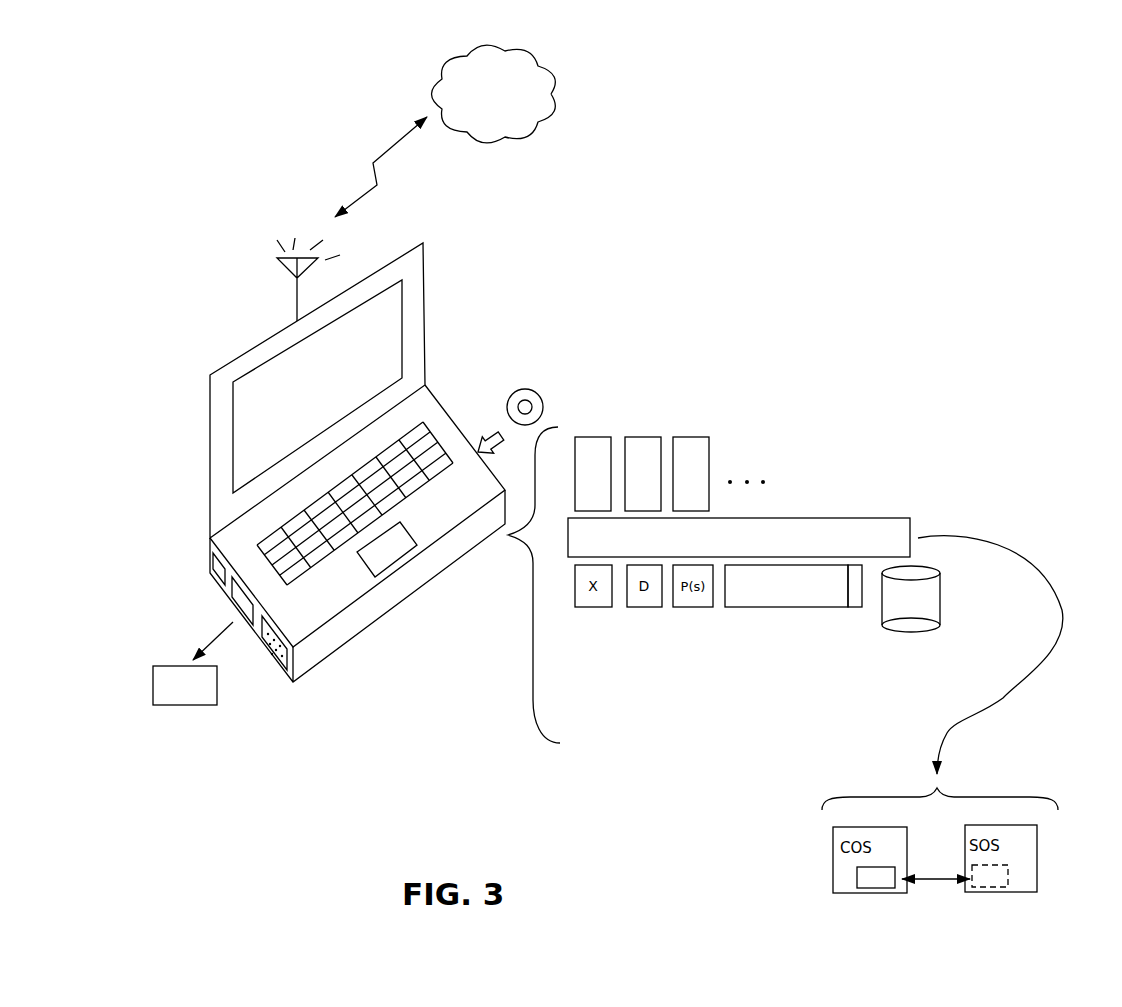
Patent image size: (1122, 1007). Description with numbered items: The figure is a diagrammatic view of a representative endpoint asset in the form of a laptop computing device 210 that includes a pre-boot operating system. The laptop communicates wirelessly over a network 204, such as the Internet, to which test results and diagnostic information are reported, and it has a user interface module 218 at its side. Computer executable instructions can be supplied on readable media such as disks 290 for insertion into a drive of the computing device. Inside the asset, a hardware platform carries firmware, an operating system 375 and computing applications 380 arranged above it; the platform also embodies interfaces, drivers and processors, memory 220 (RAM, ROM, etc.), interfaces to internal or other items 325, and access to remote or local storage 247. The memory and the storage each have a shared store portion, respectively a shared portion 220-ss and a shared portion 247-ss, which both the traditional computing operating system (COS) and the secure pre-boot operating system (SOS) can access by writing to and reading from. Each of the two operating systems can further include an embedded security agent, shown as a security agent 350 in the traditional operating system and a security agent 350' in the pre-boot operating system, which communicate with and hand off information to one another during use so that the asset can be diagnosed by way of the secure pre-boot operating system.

The network 204 is at (538, 53).
The security features determination module 210 is at (193, 337).
The user interface module 218 is at (227, 537).
The disks 290 is at (516, 389).
The internal or other items 325 is at (202, 705).
The computing applications 380 is at (868, 443).
The operating system 375 is at (910, 527).
The memory 220 is at (740, 608).
The shared portion of memory 220-ss is at (855, 608).
The remote or local storage 247 is at (940, 593).
The shared portion of storage 247-ss is at (915, 635).
The security agent 350 is at (876, 902).
The security agent 350' is at (990, 901).